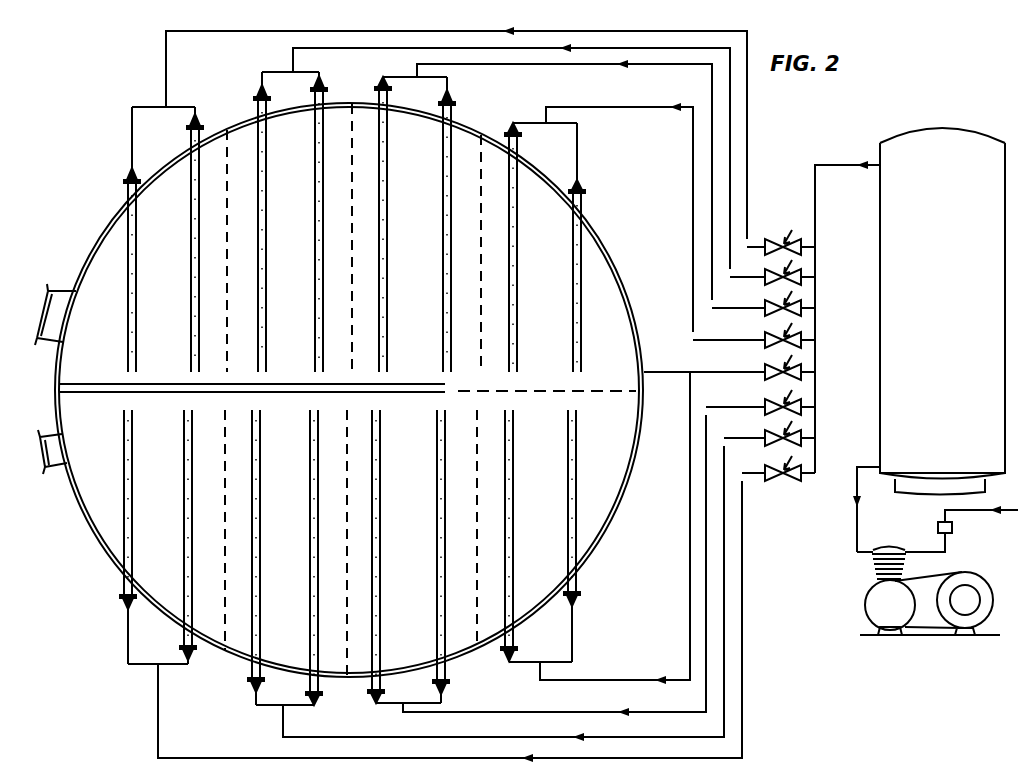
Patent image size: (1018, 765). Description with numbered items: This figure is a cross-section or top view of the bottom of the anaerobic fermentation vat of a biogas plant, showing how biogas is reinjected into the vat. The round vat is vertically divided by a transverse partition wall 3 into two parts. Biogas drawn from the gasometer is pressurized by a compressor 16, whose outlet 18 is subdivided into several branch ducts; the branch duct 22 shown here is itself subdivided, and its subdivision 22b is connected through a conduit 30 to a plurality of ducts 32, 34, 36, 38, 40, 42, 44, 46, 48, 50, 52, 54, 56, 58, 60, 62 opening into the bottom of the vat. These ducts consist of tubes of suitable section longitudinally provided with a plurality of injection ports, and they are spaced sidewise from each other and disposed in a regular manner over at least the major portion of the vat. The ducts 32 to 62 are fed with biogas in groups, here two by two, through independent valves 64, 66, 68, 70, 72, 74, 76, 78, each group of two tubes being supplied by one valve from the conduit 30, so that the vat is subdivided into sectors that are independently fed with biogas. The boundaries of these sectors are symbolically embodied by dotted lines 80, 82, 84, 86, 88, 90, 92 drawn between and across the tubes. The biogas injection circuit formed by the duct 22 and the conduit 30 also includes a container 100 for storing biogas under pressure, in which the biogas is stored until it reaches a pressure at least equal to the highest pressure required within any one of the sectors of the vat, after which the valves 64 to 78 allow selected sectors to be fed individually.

The transverse partition wall 3 is at (86, 384).
The compressor 16 is at (902, 612).
The outlet of the compressor 18 is at (873, 553).
The branch duct 22 is at (855, 527).
The subdivision of the duct 22b is at (855, 478).
The conduit 30 is at (815, 187).
The duct 32 is at (123, 522).
The duct 34 is at (190, 625).
The duct 36 is at (250, 648).
The duct 38 is at (318, 660).
The duct 40 is at (380, 660).
The duct 42 is at (445, 645).
The duct 44 is at (512, 613).
The duct 46 is at (578, 582).
The duct 48 is at (582, 280).
The duct 50 is at (518, 262).
The duct 52 is at (452, 270).
The duct 54 is at (388, 270).
The duct 56 is at (324, 280).
The duct 58 is at (266, 268).
The duct 60 is at (198, 280).
The duct 62 is at (134, 300).
The independent valve 64 is at (780, 482).
The independent valve 66 is at (802, 437).
The independent valve 68 is at (802, 406).
The independent valve 70 is at (802, 371).
The independent valve 72 is at (802, 339).
The independent valve 74 is at (802, 307).
The independent valve 76 is at (802, 276).
The independent valve 78 is at (802, 246).
The dotted line 80 is at (225, 475).
The dotted line 82 is at (347, 520).
The dotted line 84 is at (478, 527).
The dotted line 86 is at (590, 389).
The dotted line 88 is at (480, 284).
The dotted line 90 is at (353, 300).
The dotted line 92 is at (228, 335).
The container for storing biogas under pressure 100 is at (942, 311).